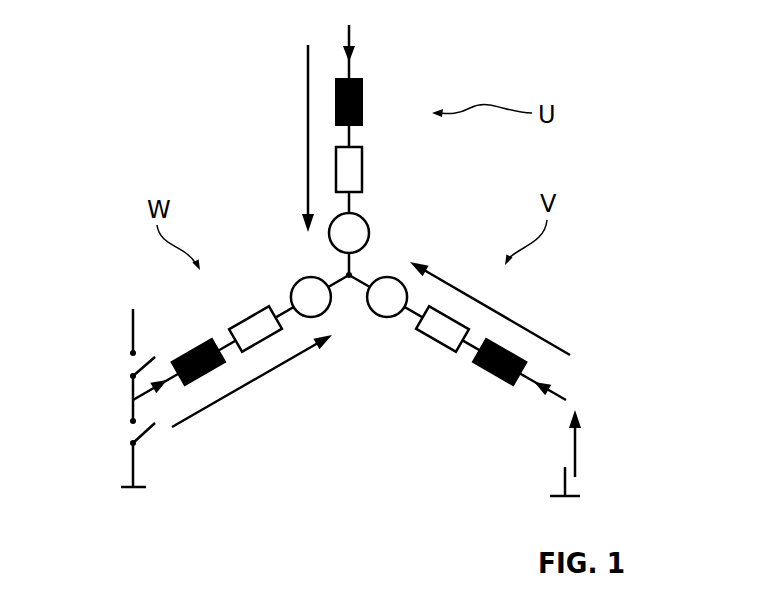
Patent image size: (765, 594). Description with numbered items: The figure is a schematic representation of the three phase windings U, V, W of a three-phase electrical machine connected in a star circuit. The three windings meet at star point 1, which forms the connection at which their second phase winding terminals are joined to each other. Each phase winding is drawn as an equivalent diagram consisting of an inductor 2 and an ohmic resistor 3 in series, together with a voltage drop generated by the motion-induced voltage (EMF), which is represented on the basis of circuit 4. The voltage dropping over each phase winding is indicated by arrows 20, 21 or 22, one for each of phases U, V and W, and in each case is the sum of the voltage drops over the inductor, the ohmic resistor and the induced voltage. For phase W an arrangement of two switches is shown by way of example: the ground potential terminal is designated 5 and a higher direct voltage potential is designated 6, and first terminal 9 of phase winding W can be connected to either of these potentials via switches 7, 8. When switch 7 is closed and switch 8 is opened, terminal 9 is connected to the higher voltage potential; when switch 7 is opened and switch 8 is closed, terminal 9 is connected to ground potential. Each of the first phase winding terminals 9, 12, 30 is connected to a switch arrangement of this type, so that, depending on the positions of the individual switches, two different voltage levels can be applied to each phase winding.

The star point 1 is at (351, 274).
The inductor 2 is at (362, 100).
The ohmic resistor 3 is at (362, 170).
The circuit 4 is at (370, 233).
The ground potential terminal 5 is at (140, 490).
The higher direct voltage potential 6 is at (133, 319).
The switch 7 is at (130, 363).
The switch 8 is at (130, 430).
The first terminal of phase winding W 9 is at (138, 395).
The first phase winding terminal 12 is at (350, 33).
The arrow 20 is at (306, 135).
The arrow 21 is at (534, 330).
The arrow 22 is at (246, 388).
The first phase winding terminal 30 is at (560, 393).